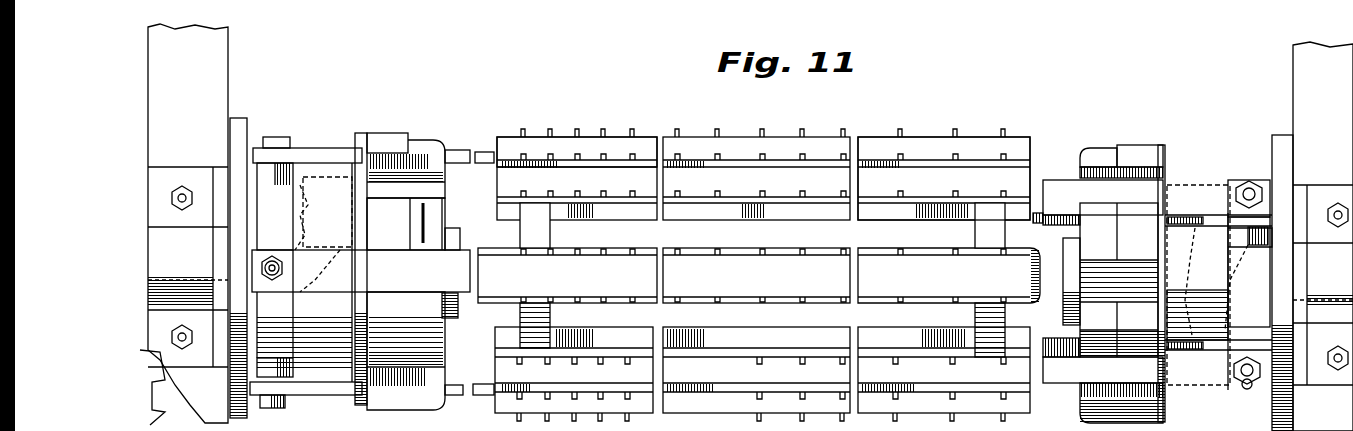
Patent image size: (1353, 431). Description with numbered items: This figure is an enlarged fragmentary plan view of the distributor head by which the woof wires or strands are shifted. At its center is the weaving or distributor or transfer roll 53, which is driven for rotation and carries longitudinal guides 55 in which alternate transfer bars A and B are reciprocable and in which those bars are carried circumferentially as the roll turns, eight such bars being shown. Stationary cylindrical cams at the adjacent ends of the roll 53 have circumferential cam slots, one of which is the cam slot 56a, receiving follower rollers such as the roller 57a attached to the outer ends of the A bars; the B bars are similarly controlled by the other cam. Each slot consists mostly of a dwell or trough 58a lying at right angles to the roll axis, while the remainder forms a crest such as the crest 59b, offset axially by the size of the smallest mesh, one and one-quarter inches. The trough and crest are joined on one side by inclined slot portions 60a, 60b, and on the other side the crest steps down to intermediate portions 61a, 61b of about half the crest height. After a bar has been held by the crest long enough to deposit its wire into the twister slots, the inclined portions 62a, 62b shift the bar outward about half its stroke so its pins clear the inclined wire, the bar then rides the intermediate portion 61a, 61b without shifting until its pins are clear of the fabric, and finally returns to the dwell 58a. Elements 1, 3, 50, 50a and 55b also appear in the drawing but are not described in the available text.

The machine frame 1 is at (1297, 80).
The frame standard 3 is at (746, 227).
The roll section 50 is at (490, 248).
The roll shaft 50a is at (361, 273).
The transfer roll 53 is at (1165, 156).
The longitudinal guides 55 is at (395, 248).
The hub sleeve 55b is at (1215, 262).
The cam slot 56a is at (287, 197).
The roller 57a is at (268, 172).
The dwell or trough 58a is at (292, 210).
The crest 59b is at (1172, 263).
The inclined slot portion 60a is at (430, 351).
The inclined slot portion 60b is at (1190, 348).
The intermediate portion 61a is at (305, 222).
The intermediate portion 61b is at (1218, 285).
The inclined portion 62a is at (308, 246).
The inclined portion 62b is at (1262, 262).
The transfer bar A is at (508, 137).
The transfer bar B is at (944, 260).